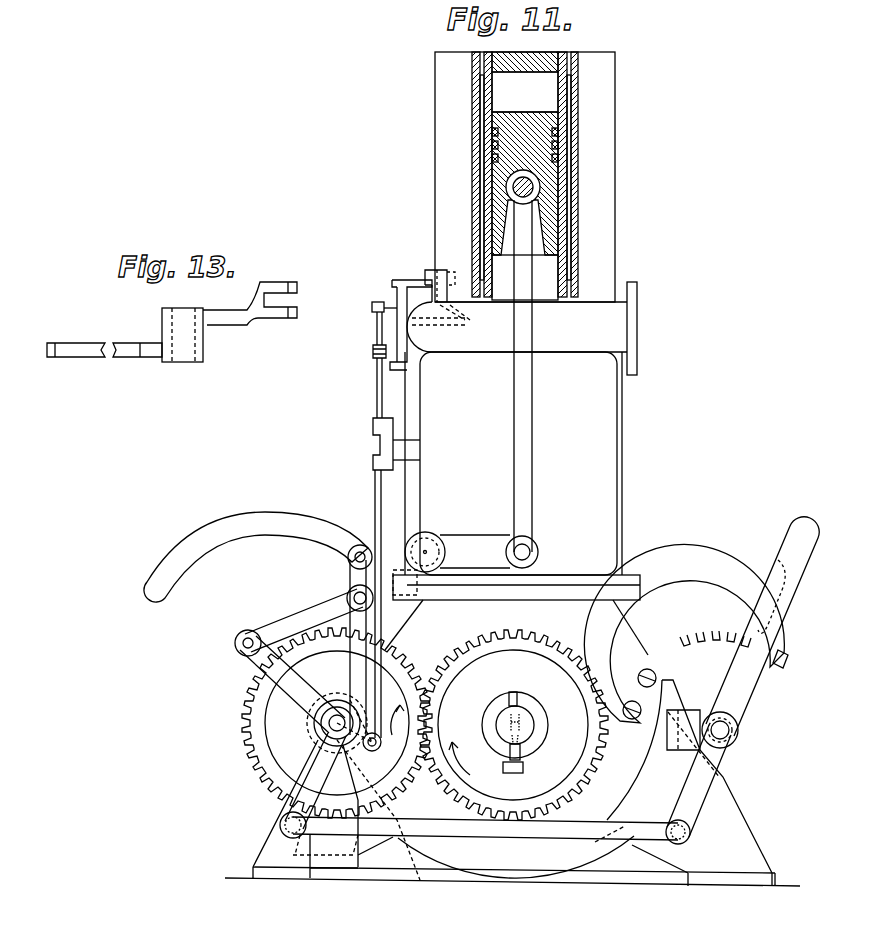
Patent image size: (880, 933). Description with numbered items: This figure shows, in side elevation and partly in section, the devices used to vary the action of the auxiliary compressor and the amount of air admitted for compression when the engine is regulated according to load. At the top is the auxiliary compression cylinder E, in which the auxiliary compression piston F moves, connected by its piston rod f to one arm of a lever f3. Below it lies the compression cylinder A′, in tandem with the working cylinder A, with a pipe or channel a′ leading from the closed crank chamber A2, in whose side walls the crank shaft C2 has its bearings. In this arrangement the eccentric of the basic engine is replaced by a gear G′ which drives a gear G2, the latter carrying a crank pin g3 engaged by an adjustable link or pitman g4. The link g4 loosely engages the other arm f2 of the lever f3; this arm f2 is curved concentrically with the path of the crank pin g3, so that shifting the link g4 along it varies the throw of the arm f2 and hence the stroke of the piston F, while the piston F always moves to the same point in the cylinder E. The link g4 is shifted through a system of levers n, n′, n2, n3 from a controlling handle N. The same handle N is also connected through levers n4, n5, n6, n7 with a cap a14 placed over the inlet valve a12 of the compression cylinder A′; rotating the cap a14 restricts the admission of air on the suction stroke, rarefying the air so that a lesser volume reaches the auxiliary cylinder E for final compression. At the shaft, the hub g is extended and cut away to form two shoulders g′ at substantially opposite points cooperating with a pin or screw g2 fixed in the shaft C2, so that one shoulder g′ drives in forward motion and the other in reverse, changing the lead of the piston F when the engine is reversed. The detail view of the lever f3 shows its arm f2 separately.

In FIG. 11, the working cylinder A is at (443, 168).
In FIG. 11, the auxiliary compression cylinder E is at (525, 92).
In FIG. 11, the auxiliary compression piston F is at (548, 222).
In FIG. 11, the piston rod f is at (514, 408).
In FIG. 11, the inlet valve a12 is at (517, 327).
In FIG. 11, the cap a14 is at (425, 280).
In FIG. 11, the compression cylinder A′ is at (516, 503).
In FIG. 11, the pipe or channel a′ is at (422, 414).
In FIG. 11, the lever f3 is at (450, 540).
In FIG. 13, the lever f3 is at (214, 326).
In FIG. 11, the arm f2 is at (255, 520).
In FIG. 13, the arm f2 is at (100, 360).
In FIG. 11, the lever n7 is at (397, 296).
In FIG. 11, the lever n6 is at (377, 392).
In FIG. 11, the lever n5 is at (373, 442).
In FIG. 11, the lever n4 is at (375, 500).
In FIG. 11, the lever n3 is at (305, 630).
In FIG. 11, the lever n2 is at (292, 684).
In FIG. 11, the lever n′ is at (305, 760).
In FIG. 11, the lever n is at (483, 832).
In FIG. 11, the gear G2 is at (410, 676).
In FIG. 11, the gear G′ is at (565, 655).
In FIG. 11, the adjustable link or pitman g4 is at (356, 674).
In FIG. 11, the crank pin g3 is at (376, 735).
In FIG. 11, the hub g is at (548, 722).
In FIG. 11, the shoulders g′ is at (516, 698).
In FIG. 11, the pin or screw g2 is at (512, 776).
In FIG. 11, the crank shaft C2 is at (497, 722).
In FIG. 11, the crank chamber A2 is at (684, 633).
In FIG. 11, the controlling handle N is at (743, 677).